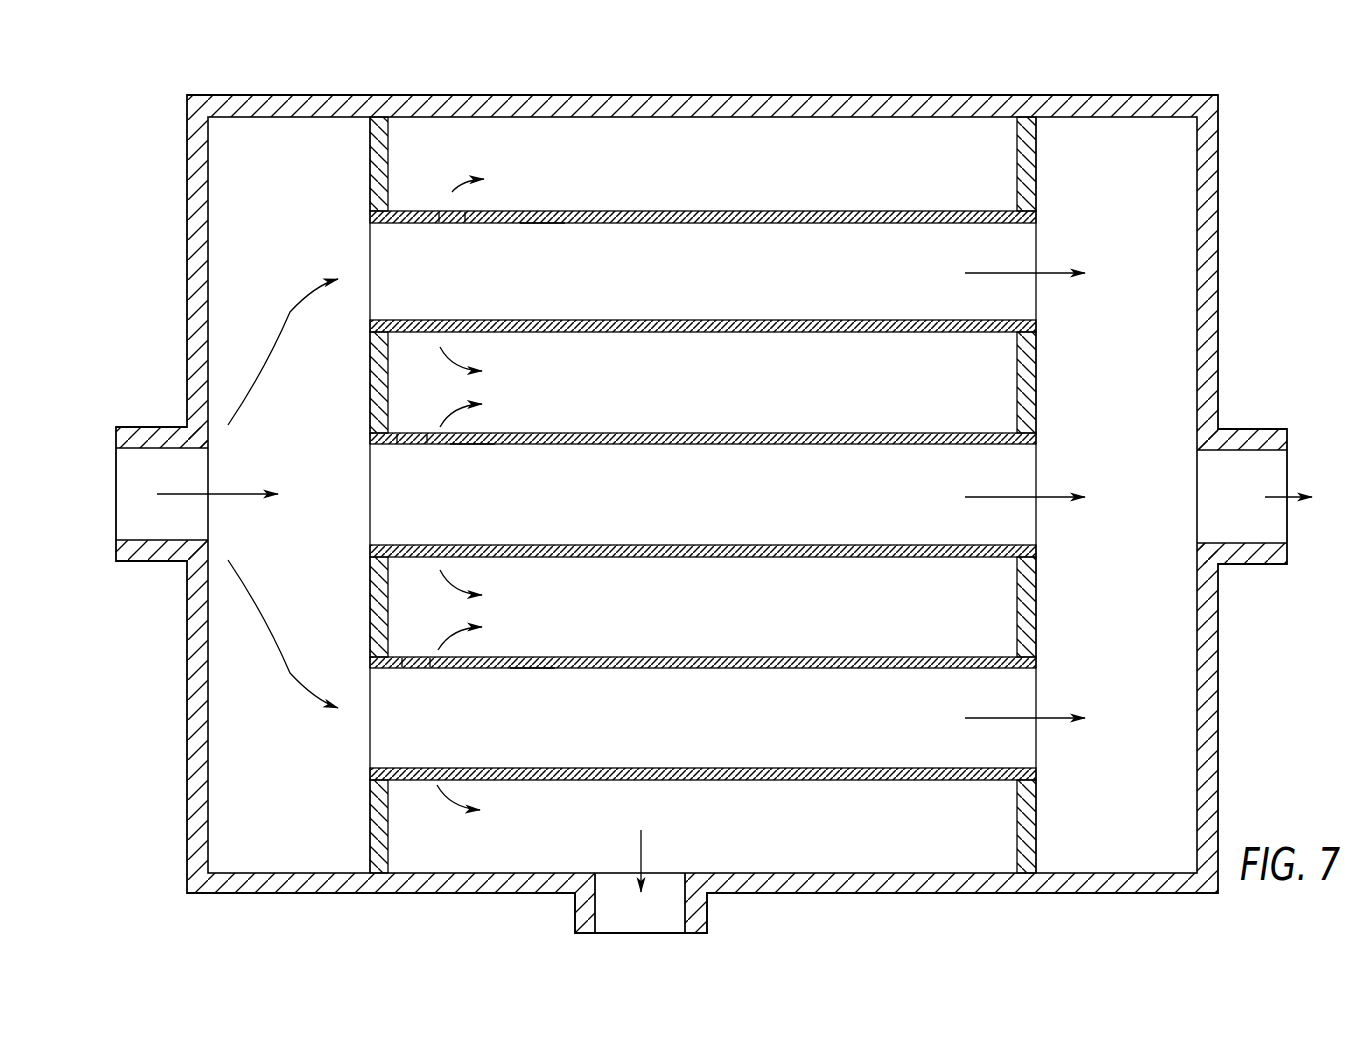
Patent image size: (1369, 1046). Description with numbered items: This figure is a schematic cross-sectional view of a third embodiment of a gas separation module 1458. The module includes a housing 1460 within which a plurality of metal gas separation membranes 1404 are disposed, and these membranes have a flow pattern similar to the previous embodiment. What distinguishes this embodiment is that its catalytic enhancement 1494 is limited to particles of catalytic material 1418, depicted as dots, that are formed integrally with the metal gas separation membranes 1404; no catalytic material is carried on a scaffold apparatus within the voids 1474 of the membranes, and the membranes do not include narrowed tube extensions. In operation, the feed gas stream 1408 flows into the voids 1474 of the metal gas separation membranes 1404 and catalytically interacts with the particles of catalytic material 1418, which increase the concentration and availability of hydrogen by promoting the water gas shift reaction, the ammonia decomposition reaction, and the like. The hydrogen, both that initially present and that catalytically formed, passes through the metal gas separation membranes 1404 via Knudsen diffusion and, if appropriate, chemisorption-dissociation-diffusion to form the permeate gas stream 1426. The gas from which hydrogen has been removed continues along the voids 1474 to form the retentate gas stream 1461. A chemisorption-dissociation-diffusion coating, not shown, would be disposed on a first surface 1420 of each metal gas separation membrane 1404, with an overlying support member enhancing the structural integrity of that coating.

The gas separation module 1458 is at (723, 507).
The housing 1460 is at (1196, 97).
The metal gas separation membrane 1404 is at (550, 207).
The first surface 1420 is at (893, 210).
The catalytic enhancement 1494 is at (543, 225).
The particles of catalytic material 1418 is at (465, 224).
The voids 1474 is at (793, 275).
The feed gas stream 1408 is at (247, 493).
The retentate gas stream 1461 is at (1291, 498).
The permeate gas stream 1426 is at (643, 853).